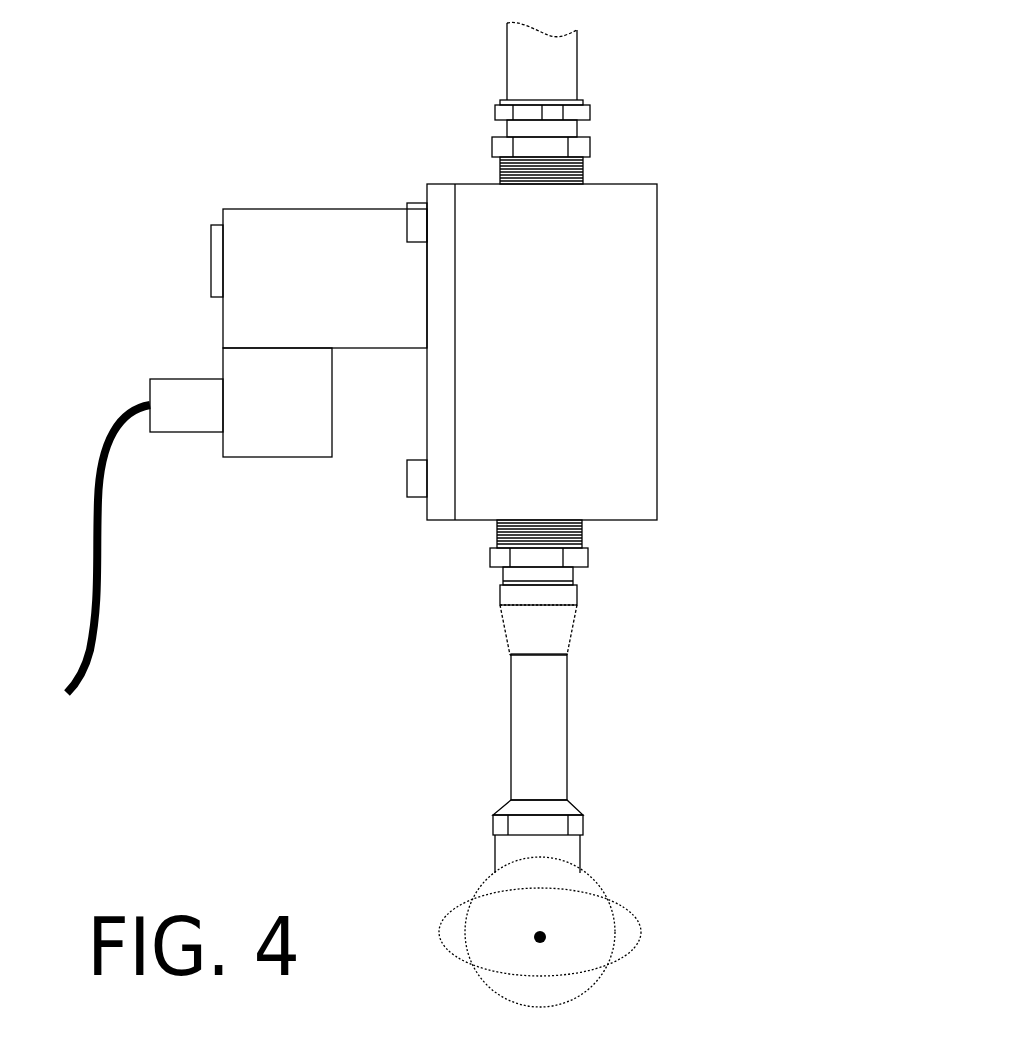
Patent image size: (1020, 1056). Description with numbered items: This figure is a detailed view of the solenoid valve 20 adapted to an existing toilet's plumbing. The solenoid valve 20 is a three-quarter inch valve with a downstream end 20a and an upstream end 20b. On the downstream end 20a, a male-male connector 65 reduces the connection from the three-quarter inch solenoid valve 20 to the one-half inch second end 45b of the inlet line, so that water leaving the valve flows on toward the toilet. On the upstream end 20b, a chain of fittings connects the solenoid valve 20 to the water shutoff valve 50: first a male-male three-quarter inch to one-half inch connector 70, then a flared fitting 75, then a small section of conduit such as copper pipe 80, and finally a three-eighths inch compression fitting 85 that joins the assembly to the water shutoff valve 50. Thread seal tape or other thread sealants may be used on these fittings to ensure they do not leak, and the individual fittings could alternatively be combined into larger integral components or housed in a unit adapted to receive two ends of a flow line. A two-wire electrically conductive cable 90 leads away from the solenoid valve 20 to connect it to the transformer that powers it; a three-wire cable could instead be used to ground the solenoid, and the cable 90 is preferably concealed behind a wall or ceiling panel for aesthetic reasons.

The solenoid valve 20 is at (193, 226).
The downstream end 20a is at (538, 185).
The valve outlet port 20b is at (552, 520).
The second end of inlet line 45b is at (534, 102).
The male-male connector 65 is at (540, 148).
The male-male ¾" to ½" connector 70 is at (545, 562).
The flared fitting 75 is at (540, 618).
The copper pipe 80 is at (543, 696).
The compression fitting 85 is at (543, 823).
The water shutoff valve 50 is at (487, 938).
The two-wire electrically conductive cable 90 is at (100, 550).